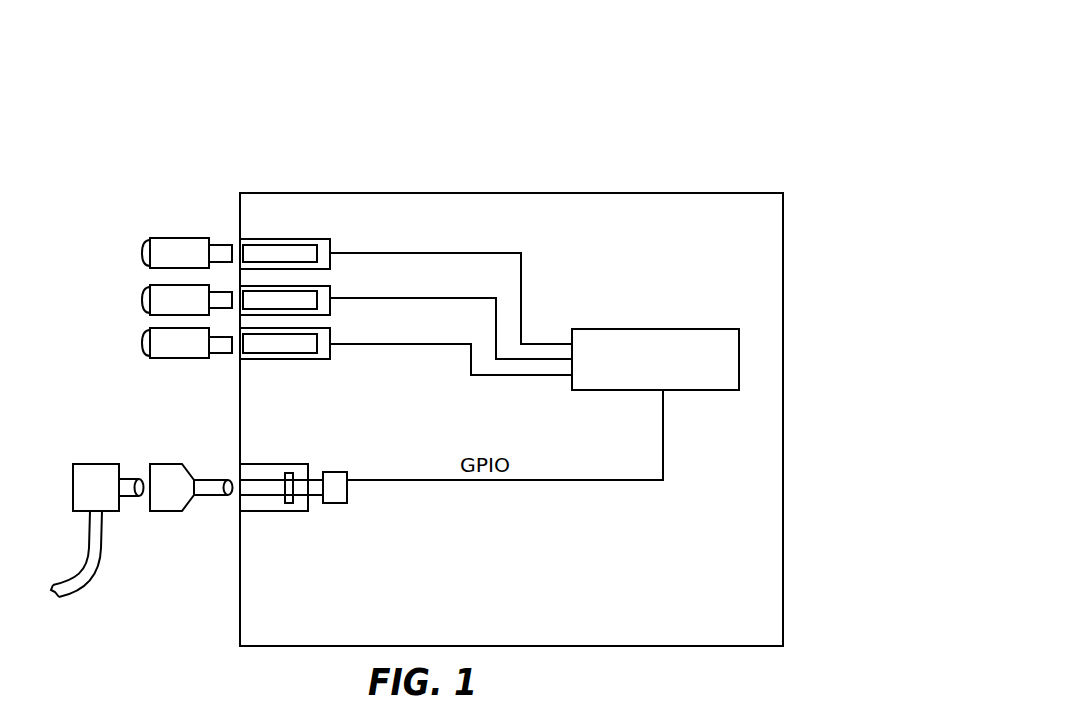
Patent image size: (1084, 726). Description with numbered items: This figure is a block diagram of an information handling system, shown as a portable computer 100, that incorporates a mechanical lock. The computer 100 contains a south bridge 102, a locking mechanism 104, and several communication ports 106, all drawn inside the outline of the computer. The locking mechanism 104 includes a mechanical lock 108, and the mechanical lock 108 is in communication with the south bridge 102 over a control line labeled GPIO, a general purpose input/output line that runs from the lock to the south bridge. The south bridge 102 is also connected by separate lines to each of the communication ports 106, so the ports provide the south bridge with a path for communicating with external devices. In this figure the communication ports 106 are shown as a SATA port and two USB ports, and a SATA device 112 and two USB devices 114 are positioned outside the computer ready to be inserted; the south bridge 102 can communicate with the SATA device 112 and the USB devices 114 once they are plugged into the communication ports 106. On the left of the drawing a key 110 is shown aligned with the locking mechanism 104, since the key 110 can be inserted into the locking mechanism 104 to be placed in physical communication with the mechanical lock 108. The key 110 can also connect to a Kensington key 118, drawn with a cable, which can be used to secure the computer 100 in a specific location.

The computer 100 is at (675, 92).
The south bridge 102 is at (601, 329).
The locking mechanism 104 is at (283, 464).
The communication ports 106 is at (285, 238).
The mechanical lock 108 is at (330, 503).
The key 110 is at (167, 464).
The SATA device 112 is at (163, 238).
The USB devices 114 is at (163, 285).
The Kensington key 118 is at (105, 511).